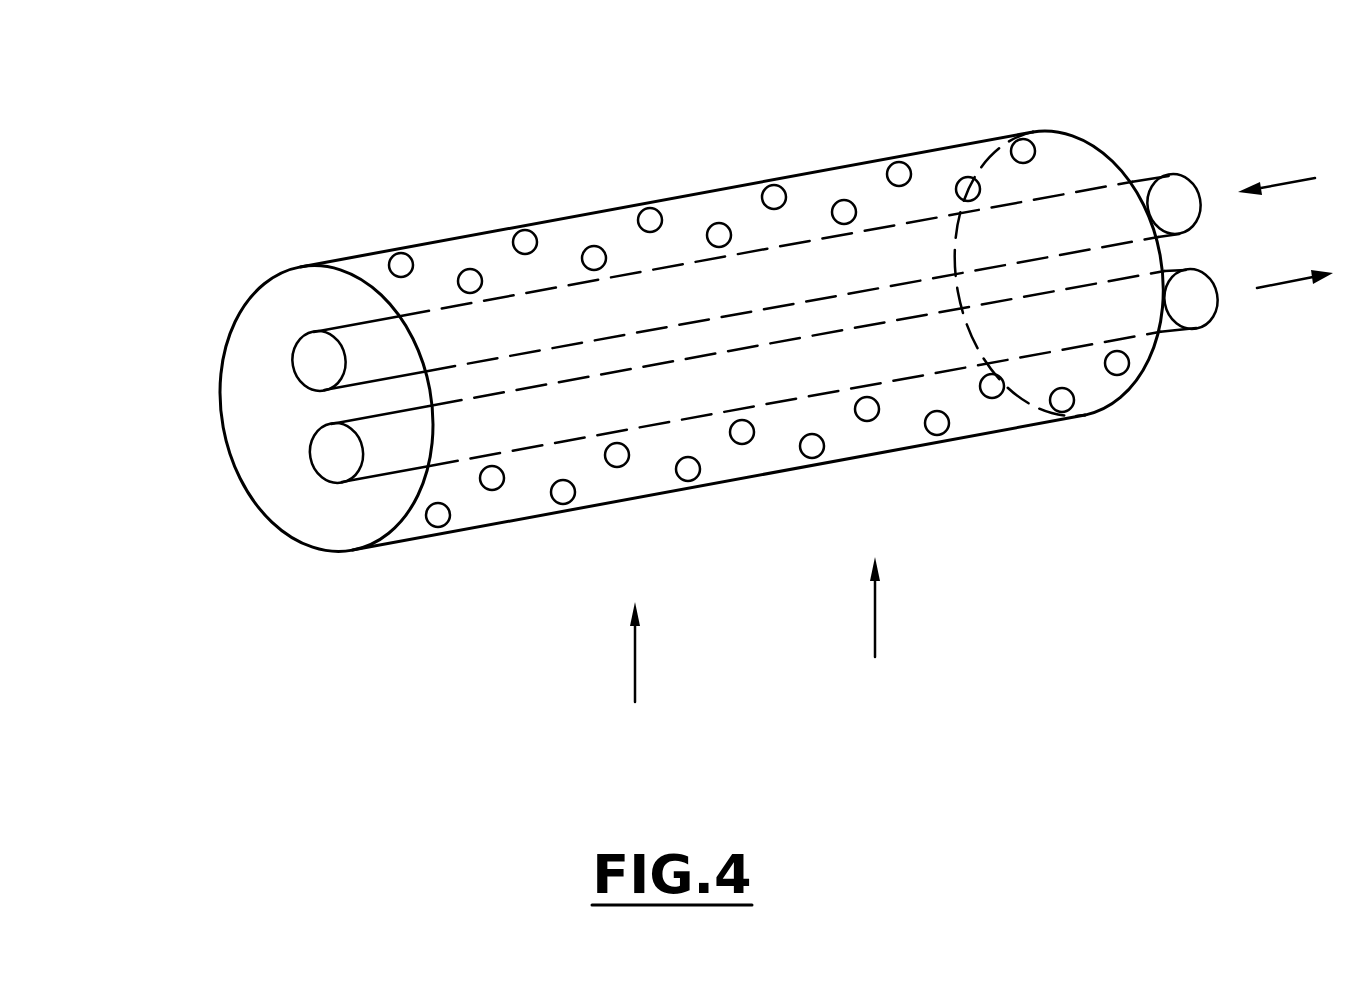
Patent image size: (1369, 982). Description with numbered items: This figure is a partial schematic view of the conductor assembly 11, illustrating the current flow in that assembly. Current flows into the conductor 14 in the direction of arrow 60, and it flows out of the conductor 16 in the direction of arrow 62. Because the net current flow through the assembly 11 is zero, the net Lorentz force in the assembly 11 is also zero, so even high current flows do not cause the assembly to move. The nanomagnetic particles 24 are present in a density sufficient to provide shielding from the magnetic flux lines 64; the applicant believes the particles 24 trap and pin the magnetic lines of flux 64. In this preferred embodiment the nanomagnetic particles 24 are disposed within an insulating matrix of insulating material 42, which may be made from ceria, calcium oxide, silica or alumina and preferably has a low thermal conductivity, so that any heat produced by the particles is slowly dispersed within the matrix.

The assembly 11 is at (633, 135).
The conductor 14 is at (323, 359).
The conductor 16 is at (337, 460).
The nanomagnetic particles 24 is at (525, 243).
The insulating material 42 is at (308, 408).
The arrow 60 is at (1278, 182).
The arrow 62 is at (1277, 285).
The magnetic flux lines 64 is at (938, 173).